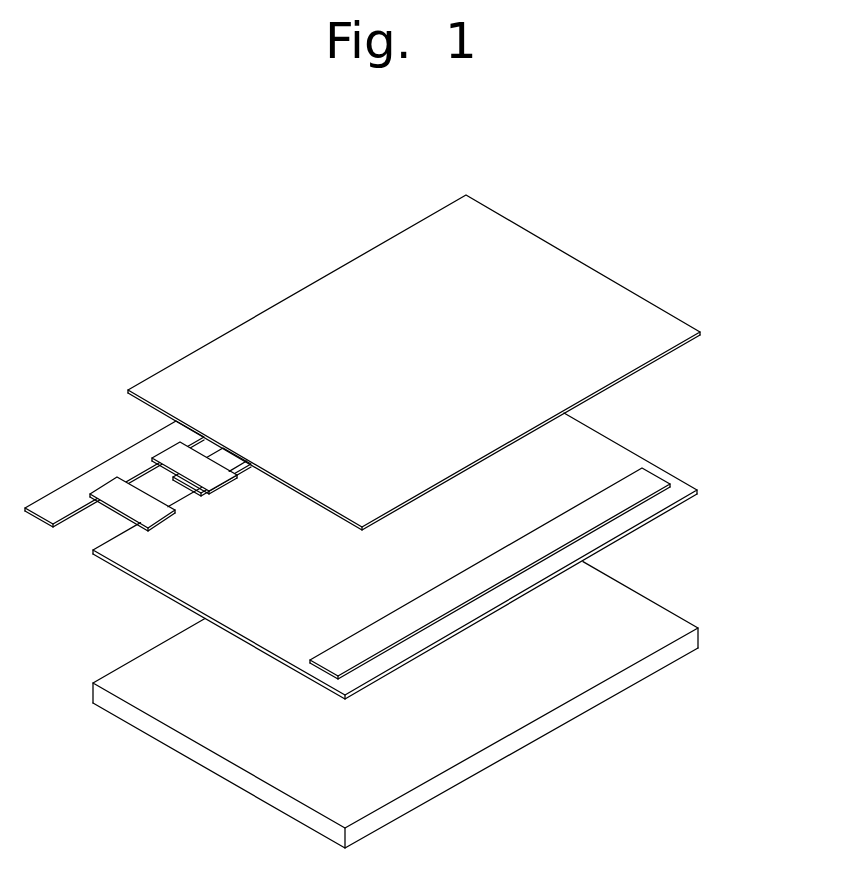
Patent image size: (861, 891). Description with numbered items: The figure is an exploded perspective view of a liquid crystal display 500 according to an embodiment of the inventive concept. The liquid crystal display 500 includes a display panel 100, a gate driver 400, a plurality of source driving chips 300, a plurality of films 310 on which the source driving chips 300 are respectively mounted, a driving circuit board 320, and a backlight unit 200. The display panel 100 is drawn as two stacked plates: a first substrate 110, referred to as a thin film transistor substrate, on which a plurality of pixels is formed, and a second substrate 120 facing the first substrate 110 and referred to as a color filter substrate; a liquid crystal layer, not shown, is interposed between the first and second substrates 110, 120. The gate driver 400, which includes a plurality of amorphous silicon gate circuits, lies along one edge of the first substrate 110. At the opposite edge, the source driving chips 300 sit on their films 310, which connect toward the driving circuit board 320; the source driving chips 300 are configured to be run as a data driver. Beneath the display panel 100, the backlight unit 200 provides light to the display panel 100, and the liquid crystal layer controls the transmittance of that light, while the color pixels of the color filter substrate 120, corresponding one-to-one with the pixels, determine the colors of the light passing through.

The liquid crystal display 500 is at (188, 216).
The display panel 100 is at (461, 447).
The first substrate 110 is at (597, 460).
The second substrate 120 is at (773, 470).
The backlight unit 200 is at (652, 622).
The source driving chips 300 is at (130, 476).
The films 310 is at (110, 490).
The driving circuit board 320 is at (130, 457).
The gate driver 400 is at (595, 515).